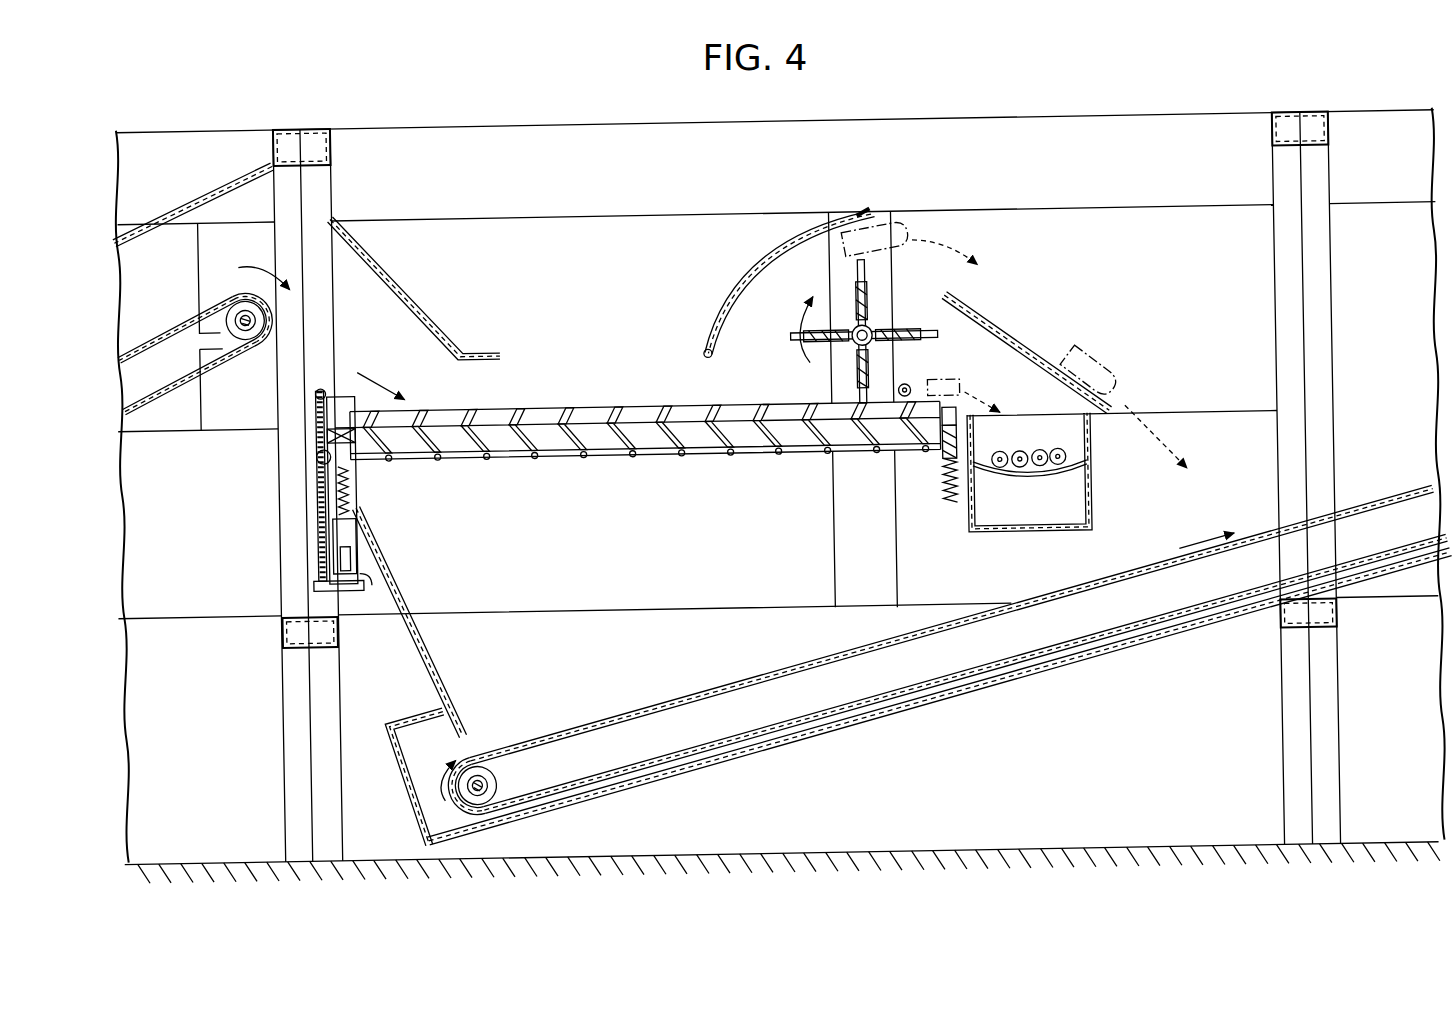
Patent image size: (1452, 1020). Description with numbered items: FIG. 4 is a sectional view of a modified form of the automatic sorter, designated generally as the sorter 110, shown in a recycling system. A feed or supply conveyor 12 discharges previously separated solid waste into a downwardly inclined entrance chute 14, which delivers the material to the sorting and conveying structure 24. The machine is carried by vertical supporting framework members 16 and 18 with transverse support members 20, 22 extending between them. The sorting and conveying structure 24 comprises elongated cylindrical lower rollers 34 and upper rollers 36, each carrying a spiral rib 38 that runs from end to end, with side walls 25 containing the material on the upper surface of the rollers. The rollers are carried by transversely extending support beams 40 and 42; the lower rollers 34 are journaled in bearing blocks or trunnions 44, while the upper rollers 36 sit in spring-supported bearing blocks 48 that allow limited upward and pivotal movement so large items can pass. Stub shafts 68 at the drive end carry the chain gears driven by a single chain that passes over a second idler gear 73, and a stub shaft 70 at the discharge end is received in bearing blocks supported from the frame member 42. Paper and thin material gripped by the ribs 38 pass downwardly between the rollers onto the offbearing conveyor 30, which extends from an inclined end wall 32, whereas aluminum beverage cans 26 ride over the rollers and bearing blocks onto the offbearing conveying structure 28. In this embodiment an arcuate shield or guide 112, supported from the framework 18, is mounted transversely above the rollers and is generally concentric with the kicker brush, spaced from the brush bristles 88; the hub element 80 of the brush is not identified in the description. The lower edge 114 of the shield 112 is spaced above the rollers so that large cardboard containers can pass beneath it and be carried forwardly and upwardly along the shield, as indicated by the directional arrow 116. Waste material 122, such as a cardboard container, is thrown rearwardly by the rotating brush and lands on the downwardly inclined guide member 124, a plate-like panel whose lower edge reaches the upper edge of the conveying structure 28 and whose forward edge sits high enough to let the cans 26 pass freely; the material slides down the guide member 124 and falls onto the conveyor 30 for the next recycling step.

The feed or supply conveyor 12 is at (145, 403).
The entrance chute 14 is at (399, 318).
The vertical supporting framework member 16 is at (317, 701).
The vertical supporting framework member 18 is at (1287, 783).
The transverse support member 20 is at (857, 222).
The transverse support member 22 is at (903, 244).
The sorting and conveying structure 24 is at (647, 543).
The side walls 25 is at (597, 309).
The aluminum beverage cans 26 is at (941, 397).
The offbearing conveying structure 28 is at (1123, 471).
The offbearing conveyor 30 is at (650, 707).
The inclined end wall 32 is at (558, 413).
The lower rollers 34 is at (714, 466).
The upper rollers 36 is at (731, 414).
The spiral rib 38 is at (639, 464).
The support frame or beam 40 is at (347, 494).
The support frame or beam 42 is at (936, 502).
The bearing blocks or trunnions 44 is at (324, 461).
The bearing blocks or trunnions 48 is at (305, 441).
The stub shafts 68 is at (304, 461).
The stub shaft 70 is at (970, 449).
The second idler gear 73 is at (307, 401).
The rotary paddle wheel 80 is at (876, 351).
The brush bristles 88 is at (864, 273).
The modified sorter 110 is at (567, 218).
The arcuate shield 112 is at (755, 271).
The lower edge of the shield 114 is at (702, 359).
The directional arrow 116 is at (788, 316).
The waste material 122 is at (1109, 375).
The guide member 124 is at (1006, 350).